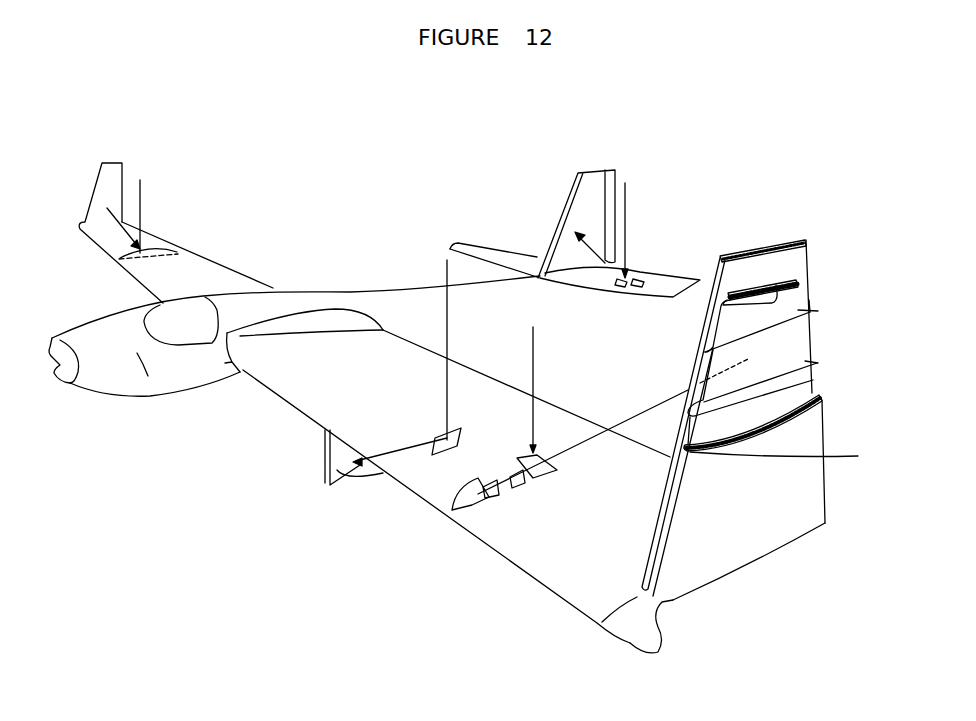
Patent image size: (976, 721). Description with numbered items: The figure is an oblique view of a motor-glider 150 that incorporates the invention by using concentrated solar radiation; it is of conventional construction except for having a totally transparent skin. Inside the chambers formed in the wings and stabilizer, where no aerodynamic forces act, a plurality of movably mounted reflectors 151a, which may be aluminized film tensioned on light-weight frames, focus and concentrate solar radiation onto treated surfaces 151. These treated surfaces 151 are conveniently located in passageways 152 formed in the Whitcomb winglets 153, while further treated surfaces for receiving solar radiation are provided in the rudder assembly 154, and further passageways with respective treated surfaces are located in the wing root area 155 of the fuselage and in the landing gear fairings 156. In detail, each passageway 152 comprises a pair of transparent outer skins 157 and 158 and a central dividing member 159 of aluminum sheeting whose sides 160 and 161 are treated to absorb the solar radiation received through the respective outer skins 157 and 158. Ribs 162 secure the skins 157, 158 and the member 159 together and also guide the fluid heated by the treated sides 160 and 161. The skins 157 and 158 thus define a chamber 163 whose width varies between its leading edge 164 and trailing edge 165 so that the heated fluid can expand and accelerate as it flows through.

The motor-glider 150 is at (400, 307).
The treated surfaces 151 is at (725, 283).
The reflectors 151a is at (172, 246).
The passageways 152 is at (850, 456).
The Whitcomb winglets 153 is at (113, 181).
The rudder assembly 154 is at (578, 213).
The wing root area 155 is at (263, 334).
The landing gear fairings 156 is at (337, 490).
The transparent outer skin 157 is at (757, 256).
The transparent outer skin 158 is at (783, 417).
The central dividing member 159 is at (752, 290).
The treated side 160 is at (784, 281).
The treated side 161 is at (806, 292).
The ribs 162 is at (757, 328).
The chamber 163 is at (760, 368).
The leading edge 164 is at (658, 563).
The trailing edge 165 is at (830, 493).